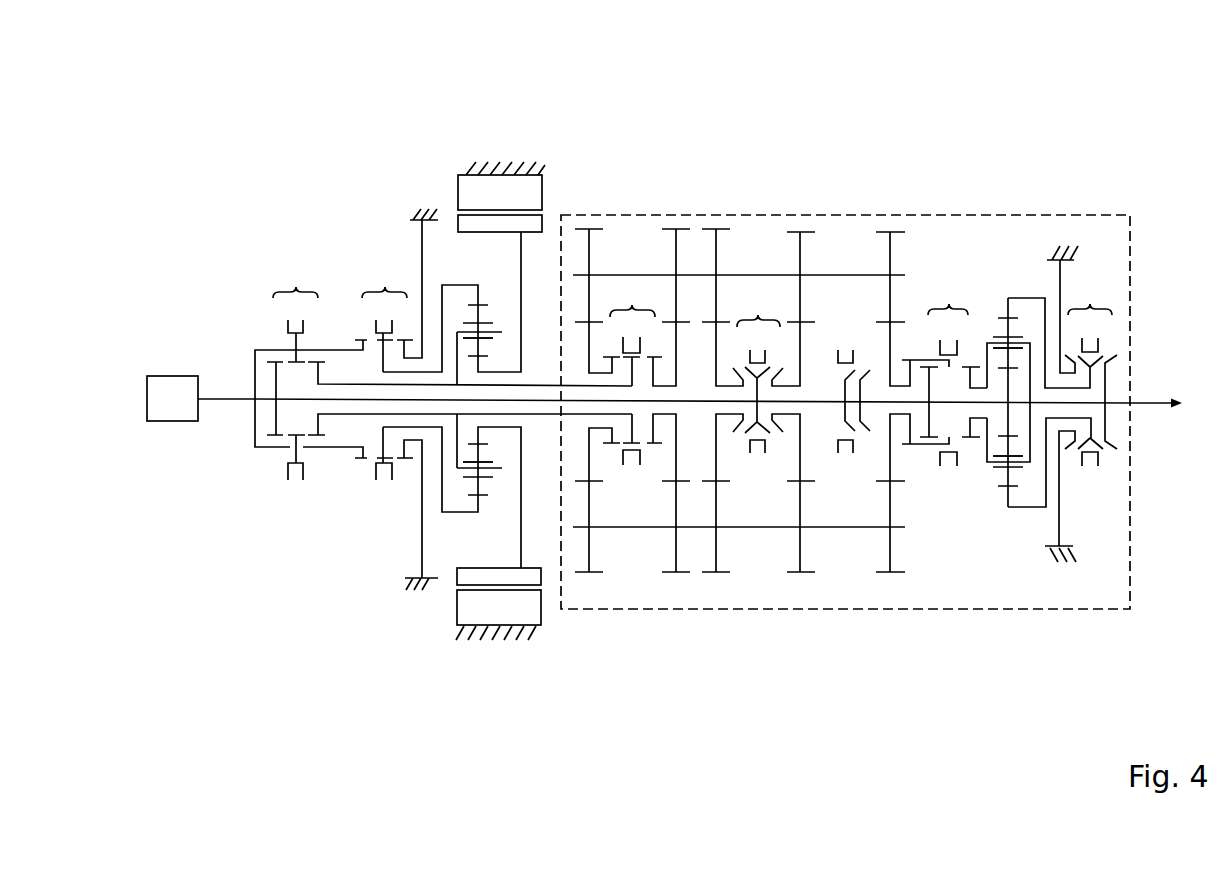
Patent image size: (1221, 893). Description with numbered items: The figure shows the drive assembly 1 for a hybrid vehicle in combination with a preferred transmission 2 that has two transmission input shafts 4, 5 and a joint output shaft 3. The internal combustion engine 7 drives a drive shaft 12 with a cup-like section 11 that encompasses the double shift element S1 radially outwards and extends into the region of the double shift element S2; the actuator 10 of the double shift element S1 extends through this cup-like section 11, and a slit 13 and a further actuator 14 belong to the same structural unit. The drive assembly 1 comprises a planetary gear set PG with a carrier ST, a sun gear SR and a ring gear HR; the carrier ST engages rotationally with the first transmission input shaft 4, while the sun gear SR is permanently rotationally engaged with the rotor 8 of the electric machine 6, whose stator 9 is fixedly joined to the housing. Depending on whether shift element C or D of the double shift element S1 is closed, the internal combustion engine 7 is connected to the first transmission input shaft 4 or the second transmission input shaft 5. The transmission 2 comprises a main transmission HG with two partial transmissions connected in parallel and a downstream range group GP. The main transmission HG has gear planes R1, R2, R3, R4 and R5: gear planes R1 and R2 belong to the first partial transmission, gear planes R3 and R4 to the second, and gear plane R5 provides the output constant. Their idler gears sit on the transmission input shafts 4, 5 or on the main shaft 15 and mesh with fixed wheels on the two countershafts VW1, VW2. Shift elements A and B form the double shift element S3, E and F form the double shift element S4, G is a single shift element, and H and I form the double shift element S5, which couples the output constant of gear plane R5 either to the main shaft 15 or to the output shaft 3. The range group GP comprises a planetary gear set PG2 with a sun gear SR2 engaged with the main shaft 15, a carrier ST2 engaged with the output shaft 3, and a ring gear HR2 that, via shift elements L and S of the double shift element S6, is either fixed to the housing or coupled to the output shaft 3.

The drive assembly 1 is at (543, 722).
The transmission 2 is at (1113, 208).
The output shaft 3 is at (1146, 401).
The transmission input shaft 4 is at (357, 384).
The transmission input shaft 5 is at (358, 400).
The electric machine 6 is at (595, 78).
The internal combustion engine 7 is at (173, 405).
The rotor 8 is at (541, 222).
The stator 9 is at (535, 201).
The actuator 10 is at (295, 497).
The cup-like section 11 is at (268, 350).
The drive shaft 12 is at (225, 396).
The slit 13 is at (286, 455).
The actuator 14 is at (383, 498).
The main shaft 15 is at (883, 403).
The ring gear HR is at (459, 286).
The planetary gear set PG is at (469, 525).
The carrier ST is at (480, 434).
The sun gear SR is at (500, 472).
The double shift element S1 is at (297, 287).
The double shift element S2 is at (385, 287).
The double shift element S3 is at (632, 305).
The double shift element S4 is at (758, 315).
The double shift element S5 is at (949, 304).
The double shift element S6 is at (1090, 304).
The gear plane R1 is at (589, 210).
The gear plane R2 is at (676, 210).
The gear plane R3 is at (716, 210).
The gear plane R4 is at (800, 212).
The gear plane R5 is at (890, 207).
The countershaft VW1 is at (838, 274).
The countershaft VW2 is at (835, 529).
The sun gear SR2 is at (1006, 395).
The ring gear HR2 is at (1027, 297).
The planetary gear set PG2 is at (1008, 257).
The carrier ST2 is at (992, 464).
The main transmission HG is at (973, 722).
The range group GP is at (1130, 722).